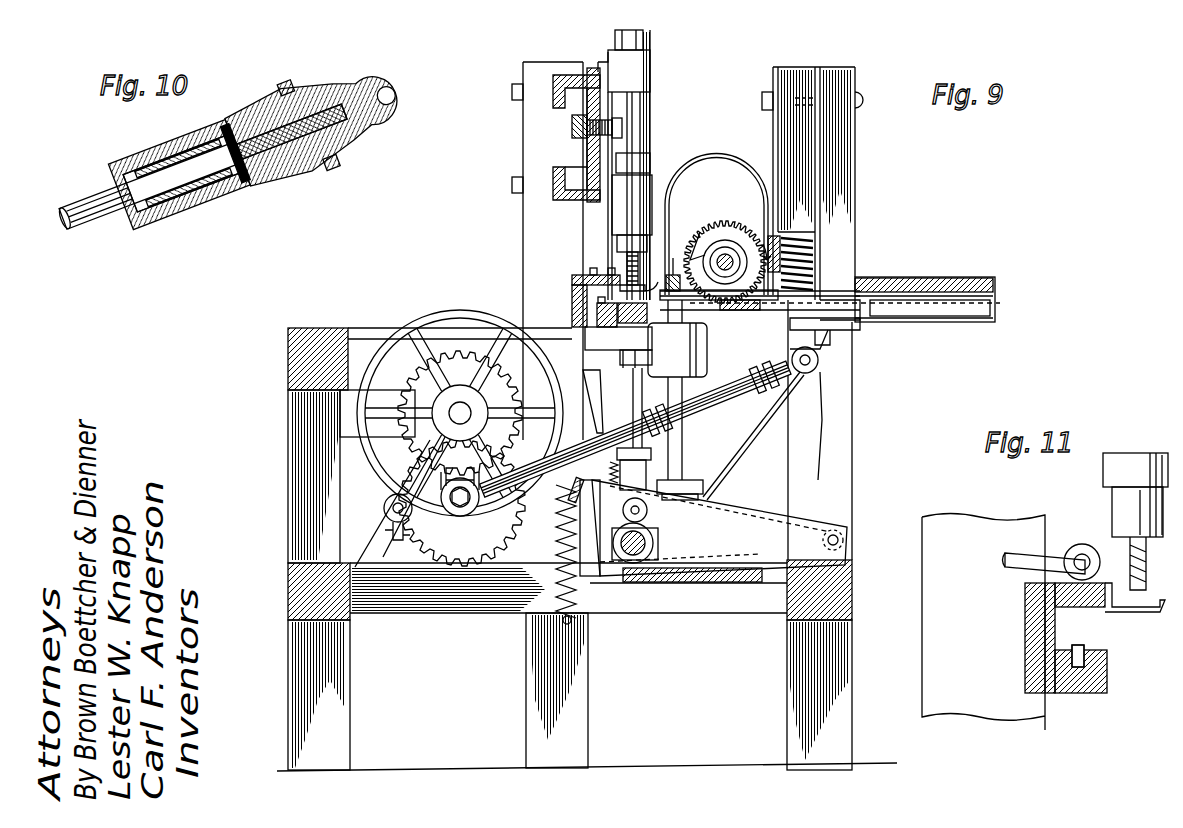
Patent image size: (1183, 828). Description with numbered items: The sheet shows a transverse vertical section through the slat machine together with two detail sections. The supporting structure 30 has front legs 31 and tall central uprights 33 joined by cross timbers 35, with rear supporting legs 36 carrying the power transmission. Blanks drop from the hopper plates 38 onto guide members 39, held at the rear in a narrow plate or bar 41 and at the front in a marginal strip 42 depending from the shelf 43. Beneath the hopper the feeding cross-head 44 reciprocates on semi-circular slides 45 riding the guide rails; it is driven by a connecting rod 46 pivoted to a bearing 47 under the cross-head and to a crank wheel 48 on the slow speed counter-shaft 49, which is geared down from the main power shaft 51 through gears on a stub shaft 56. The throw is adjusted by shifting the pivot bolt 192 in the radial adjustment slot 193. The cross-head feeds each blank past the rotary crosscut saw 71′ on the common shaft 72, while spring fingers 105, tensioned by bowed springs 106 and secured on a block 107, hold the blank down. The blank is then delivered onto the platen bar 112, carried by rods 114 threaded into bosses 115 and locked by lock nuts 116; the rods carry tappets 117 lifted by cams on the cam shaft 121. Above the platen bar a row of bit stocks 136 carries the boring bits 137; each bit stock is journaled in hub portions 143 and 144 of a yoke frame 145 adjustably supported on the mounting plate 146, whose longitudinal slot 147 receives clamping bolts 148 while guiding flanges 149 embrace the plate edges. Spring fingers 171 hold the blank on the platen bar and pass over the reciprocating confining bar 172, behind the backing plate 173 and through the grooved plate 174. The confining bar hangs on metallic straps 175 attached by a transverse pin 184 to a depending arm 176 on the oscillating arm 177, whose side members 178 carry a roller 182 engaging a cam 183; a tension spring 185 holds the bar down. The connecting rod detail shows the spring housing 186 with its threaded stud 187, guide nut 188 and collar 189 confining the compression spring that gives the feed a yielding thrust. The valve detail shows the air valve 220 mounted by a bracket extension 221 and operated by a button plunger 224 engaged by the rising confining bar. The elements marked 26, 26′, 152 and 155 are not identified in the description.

In FIG. 9, the supporting structure 30 is at (574, 410).
In FIG. 9, the front supporting legs 31 is at (846, 444).
In FIG. 9, the central standards or uprights 33 is at (530, 640).
In FIG. 9, the horizontal cross timbers 35 is at (442, 600).
In FIG. 9, the supporting legs 36 is at (340, 640).
In FIG. 9, the hopper plates 38 is at (820, 187).
In FIG. 9, the guide members 39 is at (912, 322).
In FIG. 9, the narrow plate or bar 41 is at (673, 256).
In FIG. 9, the marginal strip 42 is at (995, 290).
In FIG. 9, the projecting ledge or shelf 43 is at (922, 280).
In FIG. 9, the feeding cross-head 44 is at (870, 277).
In FIG. 9, the semi-circular slides 45 is at (885, 330).
In FIG. 9, the connecting rod 46 is at (832, 392).
In FIG. 9, the bearing 47 is at (842, 352).
In FIG. 9, the crank wheel 48 is at (452, 326).
In FIG. 9, the slow speed counter-shaft 49 is at (445, 420).
In FIG. 9, the main power shaft 51 is at (300, 416).
In FIG. 9, the stub shaft 56 is at (398, 533).
In FIG. 9, the rotary crosscut saw 71′ is at (742, 228).
In FIG. 9, the common shaft 72 is at (722, 240).
In FIG. 9, the spring fingers 105 is at (830, 240).
In FIG. 9, the bowed springs 106 is at (722, 148).
In FIG. 9, the block 107 is at (780, 206).
In FIG. 9, the platen bar 112 is at (700, 338).
In FIG. 9, the reciprocable rods 114 is at (692, 400).
In FIG. 9, the bosses 115 is at (620, 346).
In FIG. 9, the lock nuts 116 is at (635, 425).
In FIG. 9, the tappets 117 is at (605, 412).
In FIG. 9, the cam shaft 121 is at (640, 550).
In FIG. 9, the bit stocks 136 is at (688, 230).
In FIG. 9, the boring bits 137 is at (645, 268).
In FIG. 9, the hub portion 143 is at (652, 176).
In FIG. 9, the hub portion 144 is at (652, 66).
In FIG. 9, the yoke shaped frame 145 is at (600, 152).
In FIG. 9, the mounting plate 146 is at (590, 96).
In FIG. 9, the longitudinal slot 147 is at (572, 126).
In FIG. 9, the clamping bolts 148 is at (575, 136).
In FIG. 9, the guiding flanges 149 is at (608, 64).
In FIG. 9, the block 152 is at (597, 315).
In FIG. 9, the block 155 is at (572, 312).
In FIG. 9, the spring fingers 171 is at (640, 247).
In FIG. 9, the reciprocating confining bar 172 is at (575, 295).
In FIG. 9, the backing plate 173 is at (580, 310).
In FIG. 9, the plate 174 is at (575, 277).
In FIG. 9, the metallic straps 175 is at (548, 488).
In FIG. 9, the depending arm 176 is at (600, 560).
In FIG. 9, the oscillating arm 177 is at (740, 512).
In FIG. 9, the side members 178 is at (713, 528).
In FIG. 9, the roller 182 is at (650, 514).
In FIG. 9, the cam 183 is at (648, 543).
In FIG. 9, the transverse pin 184 is at (478, 518).
In FIG. 9, the tension spring 185 is at (478, 505).
In FIG. 10, the pivot bolt 192 is at (292, 131).
In FIG. 9, the pivot bolt 192 is at (472, 518).
In FIG. 9, the radial adjustment slot 193 is at (445, 522).
In FIG. 10, the handle 26 is at (316, 122).
In FIG. 10, the rod 26′ is at (147, 187).
In FIG. 10, the spring housing 186 is at (184, 173).
In FIG. 10, the threaded stud 187 is at (337, 148).
In FIG. 10, the guide nut 188 is at (179, 175).
In FIG. 10, the collar 189 is at (235, 153).
In FIG. 11, the air valve 220 is at (1080, 548).
In FIG. 11, the bracket extension 221 is at (1025, 585).
In FIG. 11, the button plunger 224 is at (1080, 605).